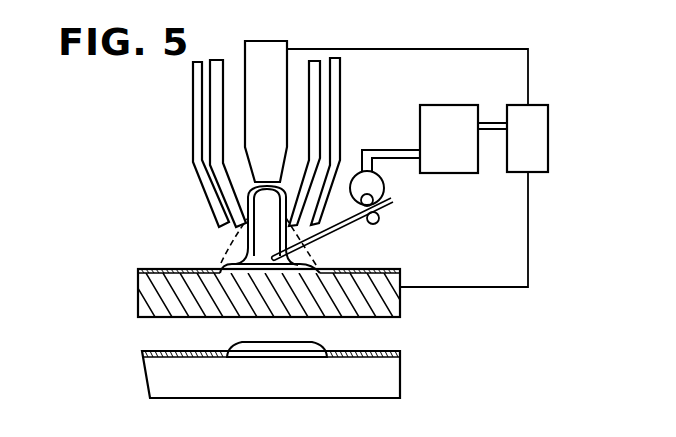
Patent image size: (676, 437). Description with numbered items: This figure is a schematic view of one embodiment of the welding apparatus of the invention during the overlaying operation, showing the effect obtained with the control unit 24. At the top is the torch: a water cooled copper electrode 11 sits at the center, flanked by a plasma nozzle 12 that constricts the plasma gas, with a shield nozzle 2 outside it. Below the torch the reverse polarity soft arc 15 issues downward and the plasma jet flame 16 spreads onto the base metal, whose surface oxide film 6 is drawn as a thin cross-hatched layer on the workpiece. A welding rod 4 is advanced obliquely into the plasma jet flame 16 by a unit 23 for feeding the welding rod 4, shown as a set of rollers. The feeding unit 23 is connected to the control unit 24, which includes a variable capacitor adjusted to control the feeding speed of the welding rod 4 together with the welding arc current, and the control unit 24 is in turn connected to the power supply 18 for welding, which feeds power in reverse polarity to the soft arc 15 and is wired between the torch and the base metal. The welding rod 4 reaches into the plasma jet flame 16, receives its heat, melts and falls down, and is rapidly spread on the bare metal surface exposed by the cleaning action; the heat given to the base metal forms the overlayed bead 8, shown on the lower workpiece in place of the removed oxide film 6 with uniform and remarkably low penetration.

The shield nozzle 2 is at (338, 70).
The welding rod 4 is at (341, 228).
The surface oxide film of the base metal 6 is at (155, 268).
The overlayed bead 8 is at (308, 351).
The water cooled copper electrode 11 is at (265, 50).
The plasma nozzle 12 is at (317, 61).
The soft arc 15 is at (257, 256).
The plasma jet flame 16 is at (220, 263).
The power supply for welding 18 is at (537, 160).
The unit for feeding the welding rod 23 is at (377, 182).
The control unit 24 is at (452, 162).